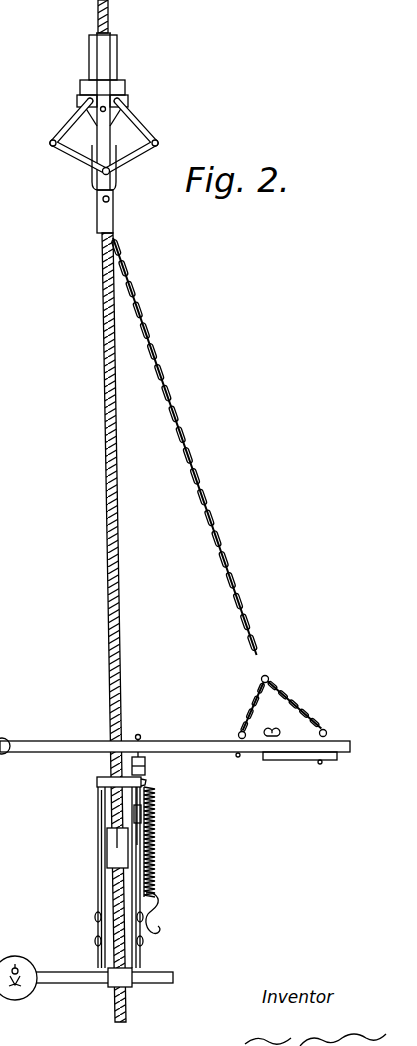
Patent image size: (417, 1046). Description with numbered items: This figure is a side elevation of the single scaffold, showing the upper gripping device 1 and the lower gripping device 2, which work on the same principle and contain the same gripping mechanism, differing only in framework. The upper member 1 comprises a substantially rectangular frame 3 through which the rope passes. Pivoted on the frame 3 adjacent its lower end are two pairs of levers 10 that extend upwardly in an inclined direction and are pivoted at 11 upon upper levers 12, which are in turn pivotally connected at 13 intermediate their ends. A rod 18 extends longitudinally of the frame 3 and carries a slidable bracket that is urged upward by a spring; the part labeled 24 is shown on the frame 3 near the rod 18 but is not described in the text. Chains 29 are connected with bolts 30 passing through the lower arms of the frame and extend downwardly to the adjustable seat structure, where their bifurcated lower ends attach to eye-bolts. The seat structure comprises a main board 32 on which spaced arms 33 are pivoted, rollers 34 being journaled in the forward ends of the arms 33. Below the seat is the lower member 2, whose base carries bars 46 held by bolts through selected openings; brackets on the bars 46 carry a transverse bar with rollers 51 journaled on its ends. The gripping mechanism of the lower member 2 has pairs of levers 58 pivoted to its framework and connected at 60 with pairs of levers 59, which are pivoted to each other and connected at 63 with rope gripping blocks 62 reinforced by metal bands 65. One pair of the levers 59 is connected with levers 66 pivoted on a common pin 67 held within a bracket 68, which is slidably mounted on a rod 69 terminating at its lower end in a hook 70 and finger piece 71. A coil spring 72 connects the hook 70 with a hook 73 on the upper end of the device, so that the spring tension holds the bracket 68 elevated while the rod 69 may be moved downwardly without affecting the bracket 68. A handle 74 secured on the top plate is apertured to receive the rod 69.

The upper gripping device 1 is at (108, 124).
The lower gripping device 2 is at (186, 868).
The frame 3 is at (105, 73).
The levers 10 is at (76, 162).
The pivot 11 is at (50, 143).
The upper levers 12 is at (74, 122).
The pivot 13 is at (108, 109).
The rod 18 is at (110, 24).
The pivot blocks 24 is at (80, 83).
The chains 29 is at (178, 406).
The bolts 30 is at (99, 201).
The main board 32 is at (300, 755).
The arms 33 is at (52, 748).
The rollers 34 is at (10, 740).
The bars 46 is at (80, 985).
The rollers 51 is at (20, 1002).
The levers 58 is at (98, 903).
The levers 59 is at (98, 868).
The pivot 60 is at (98, 887).
The rope gripping blocks 62 is at (97, 847).
The pivot 63 is at (98, 851).
The bands 65 is at (107, 838).
The levers 66 is at (141, 820).
The common pin 67 is at (128, 811).
The bracket 68 is at (139, 803).
The rod 69 is at (143, 735).
The hook 70 is at (160, 903).
The finger piece 71 is at (161, 930).
The coil spring 72 is at (148, 835).
The hook 73 is at (150, 782).
The handle 74 is at (146, 767).